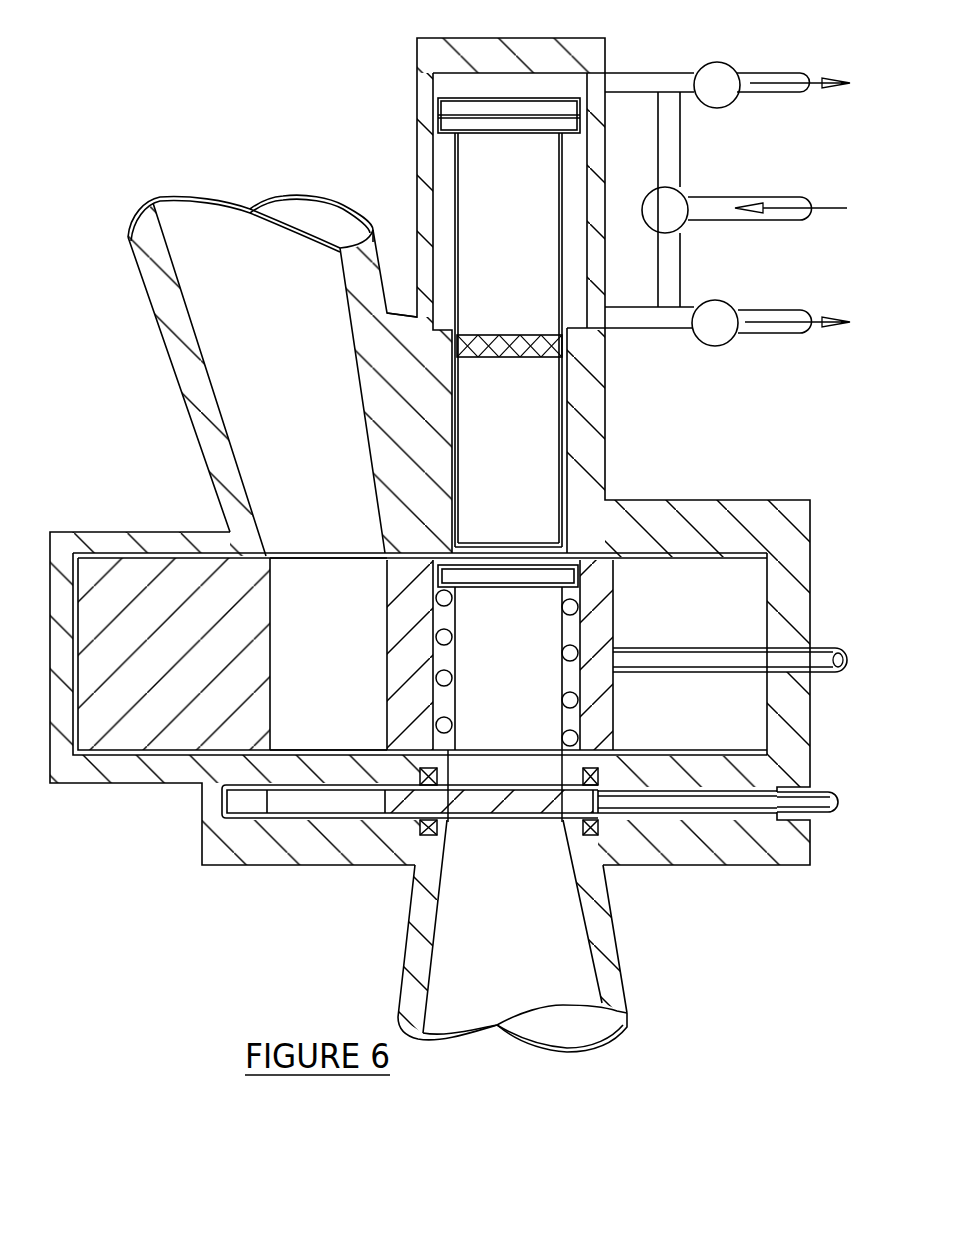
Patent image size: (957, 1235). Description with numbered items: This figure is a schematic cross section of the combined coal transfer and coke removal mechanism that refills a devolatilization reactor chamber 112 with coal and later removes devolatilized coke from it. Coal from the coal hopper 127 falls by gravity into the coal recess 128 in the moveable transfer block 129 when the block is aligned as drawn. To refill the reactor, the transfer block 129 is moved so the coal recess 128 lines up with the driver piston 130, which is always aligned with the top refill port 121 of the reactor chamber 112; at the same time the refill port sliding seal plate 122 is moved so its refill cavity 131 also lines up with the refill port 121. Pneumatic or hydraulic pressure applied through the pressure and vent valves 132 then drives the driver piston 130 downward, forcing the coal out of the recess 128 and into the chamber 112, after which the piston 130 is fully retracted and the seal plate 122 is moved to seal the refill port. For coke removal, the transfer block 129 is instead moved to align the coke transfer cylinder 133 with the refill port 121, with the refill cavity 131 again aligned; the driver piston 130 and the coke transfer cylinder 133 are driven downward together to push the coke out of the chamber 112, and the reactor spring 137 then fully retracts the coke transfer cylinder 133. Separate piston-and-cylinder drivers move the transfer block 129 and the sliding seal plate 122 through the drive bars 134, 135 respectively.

The devolatilization reactor chamber 112 is at (537, 963).
The top refill port 121 is at (495, 768).
The refill port sliding seal plate 122 is at (250, 800).
The coal hopper 127 is at (230, 350).
The coal recess 128 is at (290, 605).
The moveable transfer block 129 is at (145, 595).
The driver piston 130 is at (512, 461).
The refill cavity 131 is at (310, 800).
The pressure and vent valves 132 is at (727, 303).
The coke transfer cylinder 133 is at (512, 623).
The drive bar 134 is at (667, 660).
The drive bar 135 is at (767, 805).
The reactor spring 137 is at (437, 678).